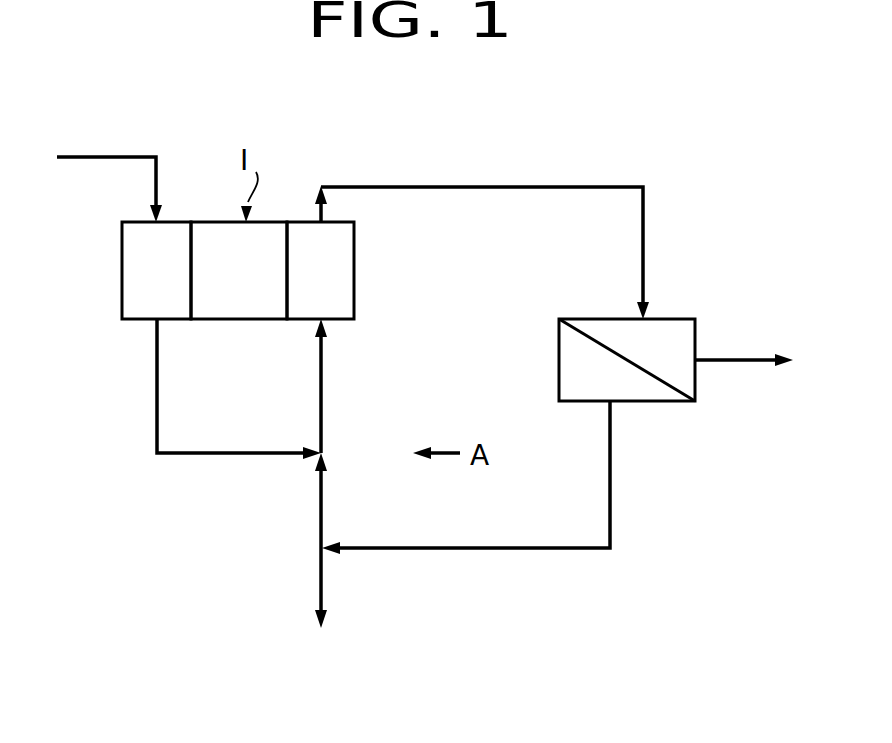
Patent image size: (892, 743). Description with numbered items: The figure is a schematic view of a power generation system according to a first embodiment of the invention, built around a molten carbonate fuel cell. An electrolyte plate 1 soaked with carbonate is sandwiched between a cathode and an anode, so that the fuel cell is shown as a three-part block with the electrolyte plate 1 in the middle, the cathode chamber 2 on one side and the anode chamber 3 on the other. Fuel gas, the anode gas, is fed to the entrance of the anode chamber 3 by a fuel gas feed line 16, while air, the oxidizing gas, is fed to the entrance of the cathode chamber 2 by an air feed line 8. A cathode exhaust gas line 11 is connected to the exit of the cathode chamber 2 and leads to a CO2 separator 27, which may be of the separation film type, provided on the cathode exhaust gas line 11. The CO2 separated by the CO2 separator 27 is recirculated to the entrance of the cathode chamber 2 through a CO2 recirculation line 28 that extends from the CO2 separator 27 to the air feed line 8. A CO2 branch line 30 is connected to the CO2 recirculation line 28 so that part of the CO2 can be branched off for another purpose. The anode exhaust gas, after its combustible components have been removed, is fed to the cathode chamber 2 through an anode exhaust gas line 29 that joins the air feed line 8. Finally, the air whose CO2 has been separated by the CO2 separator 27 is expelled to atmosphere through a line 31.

The electrolyte plate 1 is at (228, 322).
The cathode chamber 2 is at (340, 295).
The anode chamber 3 is at (128, 305).
The air feed line 8 is at (322, 402).
The cathode exhaust gas line 11 is at (476, 187).
The fuel gas feed line 16 is at (148, 157).
The CO2 separator 27 is at (667, 319).
The CO2 recirculation line 28 is at (320, 520).
The anode exhaust gas line 29 is at (187, 455).
The CO2 branch line 30 is at (323, 585).
The line 31 is at (724, 360).